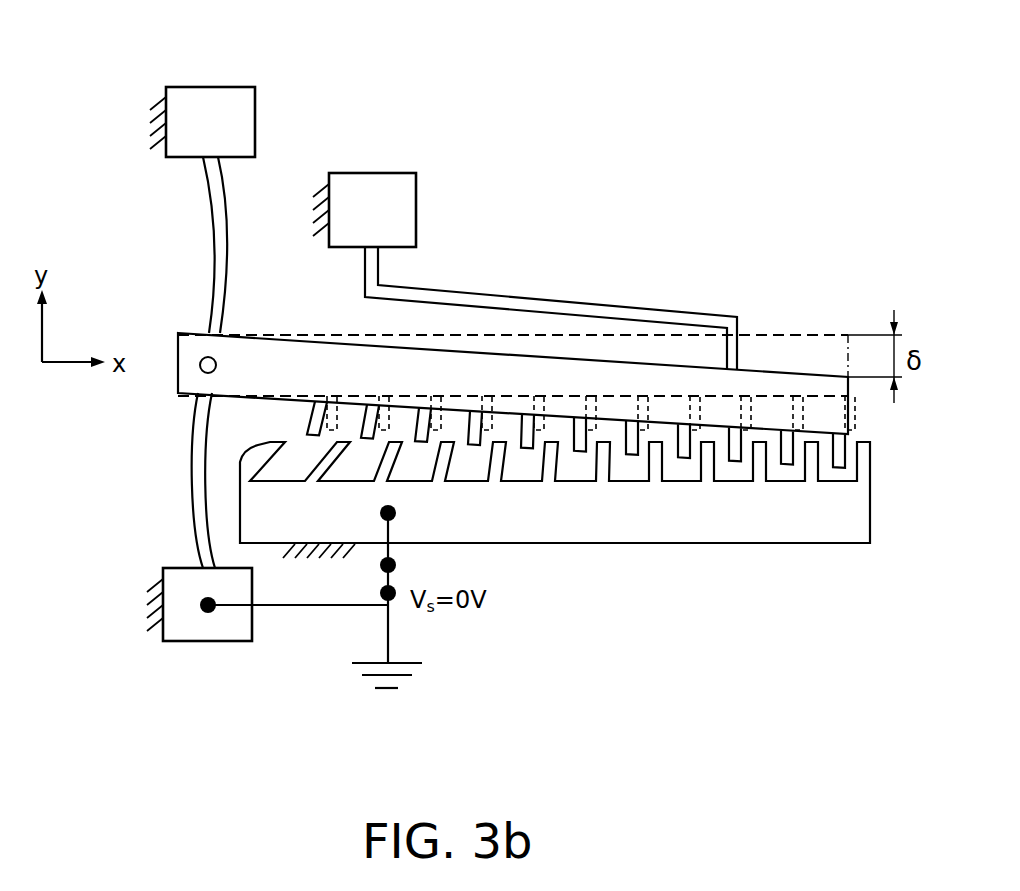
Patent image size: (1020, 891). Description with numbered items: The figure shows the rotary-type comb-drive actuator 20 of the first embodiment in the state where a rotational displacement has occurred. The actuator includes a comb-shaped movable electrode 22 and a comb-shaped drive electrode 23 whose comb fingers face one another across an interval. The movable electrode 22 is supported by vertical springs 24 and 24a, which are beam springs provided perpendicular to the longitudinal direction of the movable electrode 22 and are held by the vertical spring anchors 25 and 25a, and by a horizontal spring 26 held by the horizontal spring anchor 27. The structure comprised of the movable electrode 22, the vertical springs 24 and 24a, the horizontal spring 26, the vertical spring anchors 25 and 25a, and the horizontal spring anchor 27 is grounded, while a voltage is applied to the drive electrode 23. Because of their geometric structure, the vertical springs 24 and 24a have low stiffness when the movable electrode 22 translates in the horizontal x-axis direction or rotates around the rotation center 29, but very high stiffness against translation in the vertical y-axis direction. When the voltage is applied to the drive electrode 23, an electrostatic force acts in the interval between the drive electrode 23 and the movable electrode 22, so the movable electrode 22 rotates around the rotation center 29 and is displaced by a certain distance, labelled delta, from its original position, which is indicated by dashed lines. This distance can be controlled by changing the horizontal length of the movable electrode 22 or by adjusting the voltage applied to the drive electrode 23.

The rotary-type comb-drive actuator 20 is at (520, 146).
The comb-shaped movable electrode 22 is at (612, 370).
The comb-shaped drive electrode 23 is at (607, 545).
The vertical spring 24 is at (213, 227).
The vertical spring 24a is at (193, 504).
The vertical spring anchor 25 is at (202, 100).
The vertical spring anchor 25a is at (200, 630).
The horizontal spring 26 is at (528, 300).
The horizontal spring anchor 27 is at (380, 193).
The rotation center 29 is at (202, 366).